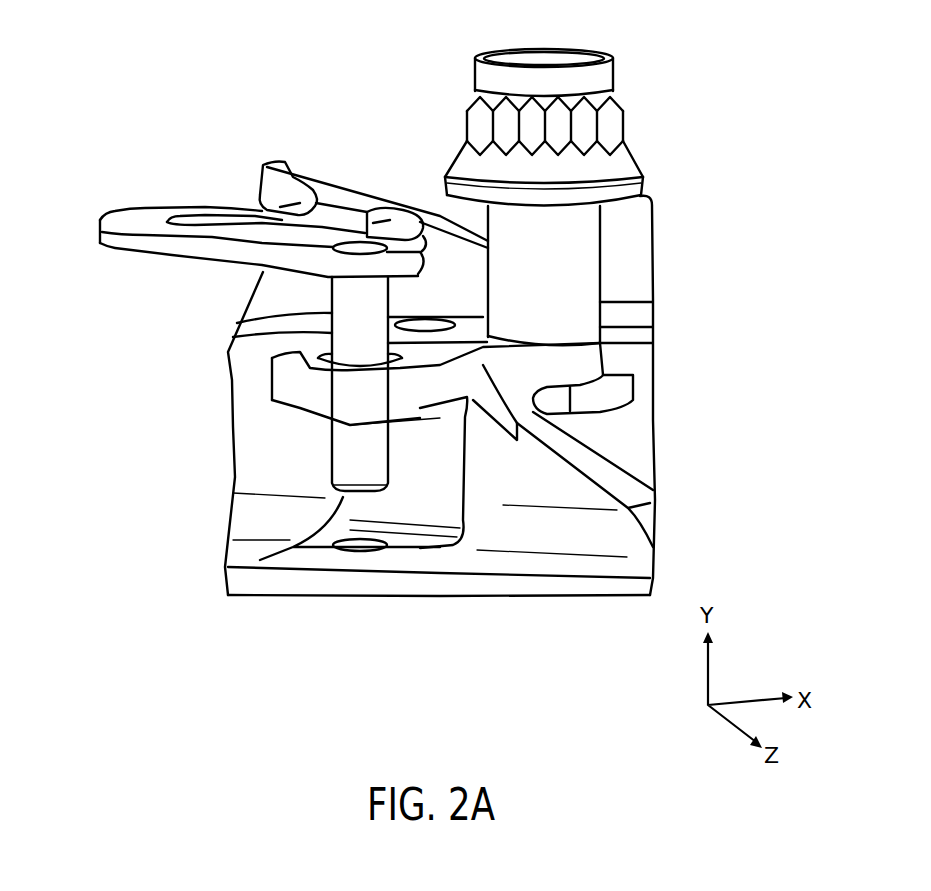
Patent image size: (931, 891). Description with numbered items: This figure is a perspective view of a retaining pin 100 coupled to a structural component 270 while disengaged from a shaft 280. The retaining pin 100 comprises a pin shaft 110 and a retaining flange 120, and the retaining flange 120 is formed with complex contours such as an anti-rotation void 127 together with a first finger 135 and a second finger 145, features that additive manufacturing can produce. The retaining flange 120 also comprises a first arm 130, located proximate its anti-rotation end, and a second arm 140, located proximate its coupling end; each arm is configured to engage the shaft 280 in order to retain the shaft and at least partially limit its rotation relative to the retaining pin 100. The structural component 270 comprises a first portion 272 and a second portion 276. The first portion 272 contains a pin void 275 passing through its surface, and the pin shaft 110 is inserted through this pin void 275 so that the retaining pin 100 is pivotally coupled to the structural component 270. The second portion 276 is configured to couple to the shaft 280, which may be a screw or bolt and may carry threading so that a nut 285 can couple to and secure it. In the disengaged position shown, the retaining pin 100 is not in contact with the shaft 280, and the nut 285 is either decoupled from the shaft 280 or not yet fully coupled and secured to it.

The retaining pin 100 is at (378, 313).
The pin shaft 110 is at (340, 310).
The retaining flange 120 is at (170, 248).
The anti-rotation void 127 is at (335, 220).
The first arm 130 is at (260, 210).
The first finger 135 is at (300, 195).
The second arm 140 is at (352, 233).
The second finger 145 is at (388, 216).
The structural component 270 is at (451, 397).
The first portion 272 is at (347, 398).
The pin void 275 is at (323, 363).
The second portion 276 is at (593, 370).
The shaft 280 is at (567, 265).
The nut 285 is at (605, 75).